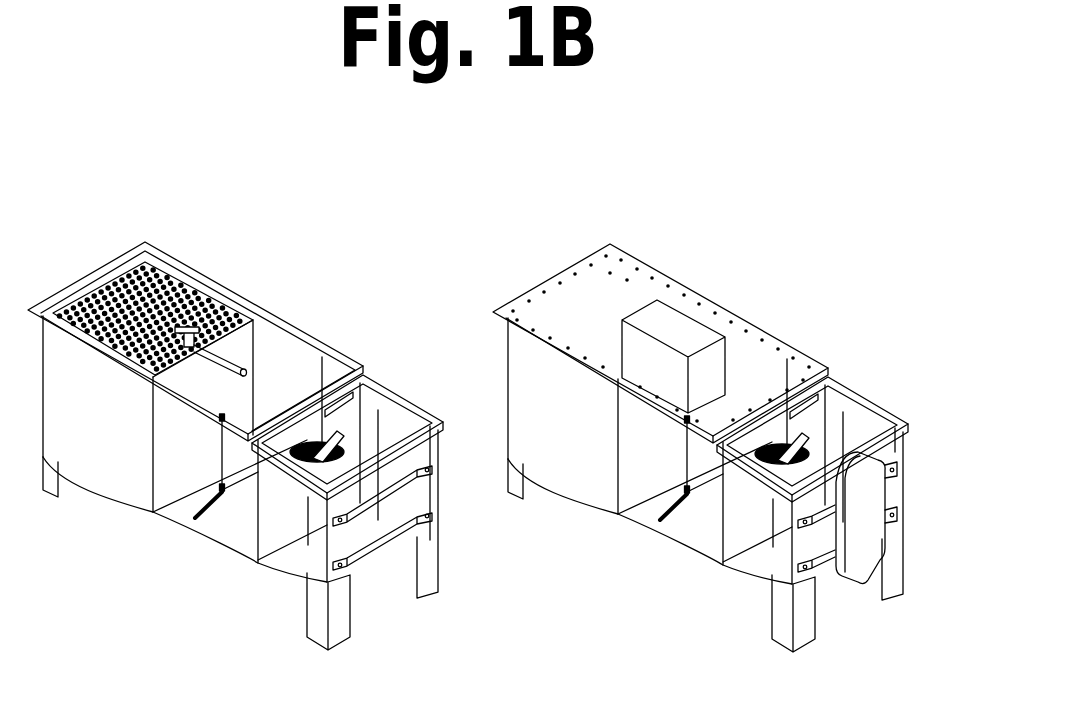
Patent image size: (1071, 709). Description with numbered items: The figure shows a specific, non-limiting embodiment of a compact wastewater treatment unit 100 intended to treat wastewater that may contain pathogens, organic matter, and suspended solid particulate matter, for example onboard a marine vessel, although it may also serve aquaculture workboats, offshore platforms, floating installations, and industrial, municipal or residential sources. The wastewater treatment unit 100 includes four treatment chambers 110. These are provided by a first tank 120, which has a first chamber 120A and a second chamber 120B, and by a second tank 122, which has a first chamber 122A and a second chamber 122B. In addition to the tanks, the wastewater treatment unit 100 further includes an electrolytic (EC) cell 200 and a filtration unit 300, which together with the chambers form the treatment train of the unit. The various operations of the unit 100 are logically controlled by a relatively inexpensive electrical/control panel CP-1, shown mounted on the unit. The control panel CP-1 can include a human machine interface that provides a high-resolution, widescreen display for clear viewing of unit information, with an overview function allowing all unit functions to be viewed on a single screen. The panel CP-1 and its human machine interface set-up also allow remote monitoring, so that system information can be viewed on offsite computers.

The wastewater treatment unit 100 is at (455, 227).
The treatment chambers 110 is at (775, 335).
The first tank 120 is at (153, 517).
The first chamber 120A is at (185, 285).
The second chamber 120B is at (277, 360).
The second tank 122 is at (287, 572).
The first chamber 122A is at (373, 402).
The second chamber 122B is at (340, 435).
The filtration unit 300 is at (343, 460).
The electrolytic (EC) cell 200 is at (867, 498).
The electrical/control panel CP-1 is at (693, 318).